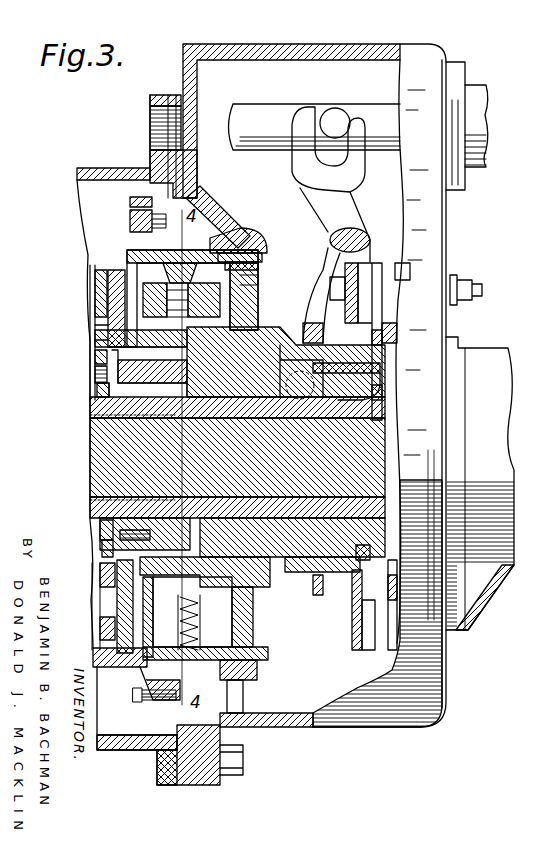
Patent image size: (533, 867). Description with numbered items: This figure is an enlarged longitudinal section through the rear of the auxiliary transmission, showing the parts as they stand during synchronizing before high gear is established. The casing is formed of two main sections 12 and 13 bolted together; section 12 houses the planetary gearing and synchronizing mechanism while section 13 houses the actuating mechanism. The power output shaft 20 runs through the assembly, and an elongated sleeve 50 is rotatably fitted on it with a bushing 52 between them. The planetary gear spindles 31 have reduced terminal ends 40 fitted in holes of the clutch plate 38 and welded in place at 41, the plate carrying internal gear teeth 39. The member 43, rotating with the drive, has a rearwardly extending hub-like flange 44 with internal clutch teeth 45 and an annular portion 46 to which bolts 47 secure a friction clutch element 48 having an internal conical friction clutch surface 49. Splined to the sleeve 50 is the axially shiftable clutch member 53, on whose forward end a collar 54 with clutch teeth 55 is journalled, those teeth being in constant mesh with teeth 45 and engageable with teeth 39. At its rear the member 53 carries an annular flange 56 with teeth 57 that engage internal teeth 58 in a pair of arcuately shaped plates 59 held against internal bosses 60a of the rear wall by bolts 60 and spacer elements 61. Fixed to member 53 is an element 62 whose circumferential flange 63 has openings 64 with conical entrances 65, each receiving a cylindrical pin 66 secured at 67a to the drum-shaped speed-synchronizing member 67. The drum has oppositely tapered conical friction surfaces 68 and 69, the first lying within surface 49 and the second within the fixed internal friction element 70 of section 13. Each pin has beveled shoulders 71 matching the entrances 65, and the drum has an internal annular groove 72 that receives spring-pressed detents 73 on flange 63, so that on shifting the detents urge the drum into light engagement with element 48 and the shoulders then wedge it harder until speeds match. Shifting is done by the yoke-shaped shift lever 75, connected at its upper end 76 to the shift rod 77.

The casing section 12 is at (116, 170).
The casing section 13 is at (312, 30).
The power output shaft 20 is at (110, 455).
The planetary gear spindles 31 is at (92, 580).
The clutch plate 38 is at (90, 308).
The gear teeth 39 is at (95, 370).
The reduced terminal ends 40 is at (103, 597).
The weld 41 is at (100, 636).
The member 43 is at (95, 290).
The hub-like flange 44 is at (95, 352).
The clutch teeth 45 is at (102, 550).
The annular portion 46 is at (141, 198).
The bolts 47 is at (130, 220).
The friction clutch element 48 is at (160, 740).
The internal conical friction clutch surface 49 is at (133, 693).
The sleeve 50 is at (222, 403).
The bushing 52 is at (90, 413).
The clutch member 53 is at (265, 360).
The collar 54 is at (109, 388).
The clutch teeth 55 is at (97, 385).
The annular flange 56 is at (315, 575).
The teeth 57 is at (312, 322).
The internal teeth 58 is at (398, 331).
The arcuately shaped plates 59 is at (360, 296).
The bolts 60 is at (476, 290).
The internal bosses 60a is at (398, 270).
The spacer elements 61 is at (376, 270).
The element 62 is at (245, 328).
The circumferential flange 63 is at (108, 333).
The openings 64 is at (262, 270).
The conical entrances 65 is at (262, 255).
The cylindrical pin 66 is at (204, 300).
The speed-synchronizing member 67 is at (250, 262).
The pin securing point 67a is at (252, 284).
The conical friction surface 68 is at (127, 255).
The conical friction surface 69 is at (246, 252).
The fixed internal friction element 70 is at (236, 244).
The beveled shoulders 71 is at (155, 300).
The annular groove 72 is at (235, 232).
The spring-pressed detents 73 is at (258, 663).
The shift lever 75 is at (353, 215).
The connection 76 is at (343, 114).
The shift rod 77 is at (290, 112).